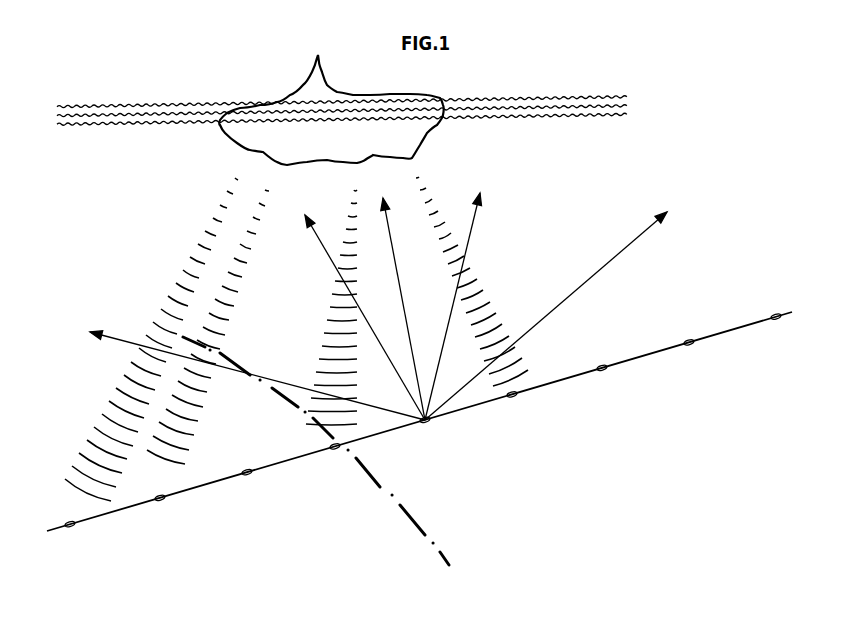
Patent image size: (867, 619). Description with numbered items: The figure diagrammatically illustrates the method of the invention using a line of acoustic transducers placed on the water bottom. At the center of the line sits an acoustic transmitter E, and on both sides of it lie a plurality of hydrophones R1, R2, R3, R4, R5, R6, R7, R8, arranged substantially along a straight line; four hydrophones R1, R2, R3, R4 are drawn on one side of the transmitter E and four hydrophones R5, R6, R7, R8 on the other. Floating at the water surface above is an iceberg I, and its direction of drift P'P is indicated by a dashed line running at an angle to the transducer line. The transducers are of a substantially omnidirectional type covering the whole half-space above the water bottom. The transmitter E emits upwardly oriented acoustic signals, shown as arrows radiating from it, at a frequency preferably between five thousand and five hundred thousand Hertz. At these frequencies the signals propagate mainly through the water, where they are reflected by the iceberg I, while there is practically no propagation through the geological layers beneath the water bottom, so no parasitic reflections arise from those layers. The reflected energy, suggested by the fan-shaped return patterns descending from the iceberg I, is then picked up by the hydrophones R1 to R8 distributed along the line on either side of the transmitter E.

The iceberg I is at (270, 78).
The acoustic transmitter E is at (378, 319).
The hydrophone R1 is at (72, 534).
The hydrophone R2 is at (164, 508).
The hydrophone R3 is at (252, 484).
The hydrophone R4 is at (342, 457).
The hydrophone R5 is at (518, 407).
The hydrophone R6 is at (605, 380).
The hydrophone R7 is at (693, 354).
The hydrophone R8 is at (781, 327).
The direction of drift P is at (265, 383).
The direction of drift P' is at (412, 515).